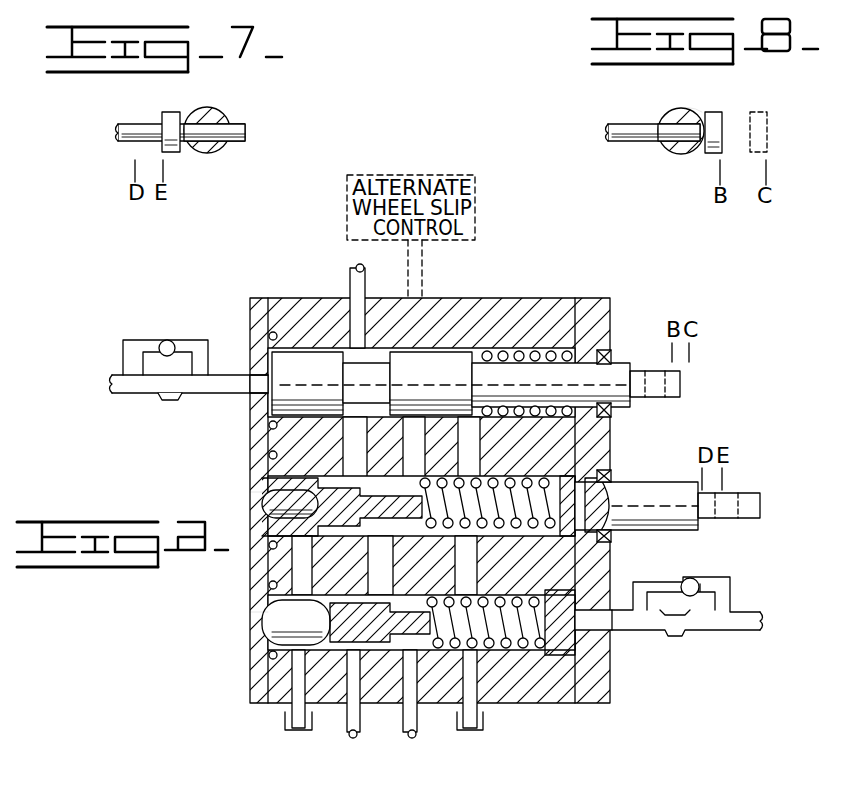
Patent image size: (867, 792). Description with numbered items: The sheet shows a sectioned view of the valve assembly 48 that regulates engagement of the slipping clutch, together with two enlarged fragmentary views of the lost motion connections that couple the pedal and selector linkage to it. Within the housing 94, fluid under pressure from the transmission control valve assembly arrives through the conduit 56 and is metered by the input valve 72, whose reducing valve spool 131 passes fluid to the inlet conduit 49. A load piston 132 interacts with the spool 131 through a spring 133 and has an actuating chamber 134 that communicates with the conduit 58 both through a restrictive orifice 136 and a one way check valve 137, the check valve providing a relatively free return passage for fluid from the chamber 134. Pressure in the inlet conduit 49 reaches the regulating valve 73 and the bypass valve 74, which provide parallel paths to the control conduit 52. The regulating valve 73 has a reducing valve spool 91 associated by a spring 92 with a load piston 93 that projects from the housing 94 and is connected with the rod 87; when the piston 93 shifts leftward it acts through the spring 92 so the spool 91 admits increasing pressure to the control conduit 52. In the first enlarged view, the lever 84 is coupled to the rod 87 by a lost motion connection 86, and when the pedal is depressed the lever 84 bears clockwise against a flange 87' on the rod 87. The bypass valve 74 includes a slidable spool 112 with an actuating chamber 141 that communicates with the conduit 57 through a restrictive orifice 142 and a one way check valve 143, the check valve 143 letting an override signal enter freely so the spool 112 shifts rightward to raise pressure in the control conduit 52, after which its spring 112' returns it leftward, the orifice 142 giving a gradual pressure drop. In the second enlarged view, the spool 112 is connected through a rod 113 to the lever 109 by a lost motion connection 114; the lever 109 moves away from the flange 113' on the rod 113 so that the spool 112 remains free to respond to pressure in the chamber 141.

In FIG. 7, the rod 87 is at (172, 116).
In FIG. 7, the flange 87' is at (161, 116).
In FIG. 7, the lost motion connection 86 is at (194, 107).
In FIG. 7, the lever 84 is at (204, 153).
In FIG. 8, the rod 113 is at (647, 116).
In FIG. 8, the flange 113' is at (738, 116).
In FIG. 8, the lost motion connection 114 is at (697, 107).
In FIG. 8, the lever 109 is at (684, 153).
In FIG. 9, the valve assembly 48 is at (513, 292).
In FIG. 9, the housing 94 is at (560, 311).
In FIG. 9, the control conduit 52 is at (350, 281).
In FIG. 9, the actuating chamber 141 is at (292, 353).
In FIG. 9, the bypass valve spool 112 is at (480, 385).
In FIG. 9, the spring 112' is at (527, 366).
In FIG. 9, the bypass valve 74 is at (246, 404).
In FIG. 9, the conduit 57 is at (119, 375).
In FIG. 9, the one way check valve 143 is at (170, 338).
In FIG. 9, the restrictive orifice 142 is at (170, 398).
In FIG. 9, the regulating valve 73 is at (246, 491).
In FIG. 9, the reducing valve spool 91 is at (262, 513).
In FIG. 9, the spring 92 is at (490, 479).
In FIG. 9, the load piston 93 is at (622, 500).
In FIG. 9, the input valve 72 is at (246, 614).
In FIG. 9, the reducing valve spool 131 is at (262, 643).
In FIG. 9, the load piston 132 is at (538, 594).
In FIG. 9, the spring 133 is at (500, 648).
In FIG. 9, the actuating chamber 134 is at (570, 640).
In FIG. 9, the one way check valve 137 is at (694, 575).
In FIG. 9, the conduit 58 is at (746, 619).
In FIG. 9, the restrictive orifice 136 is at (675, 634).
In FIG. 9, the conduit 56 is at (351, 739).
In FIG. 9, the inlet conduit 49 is at (414, 740).